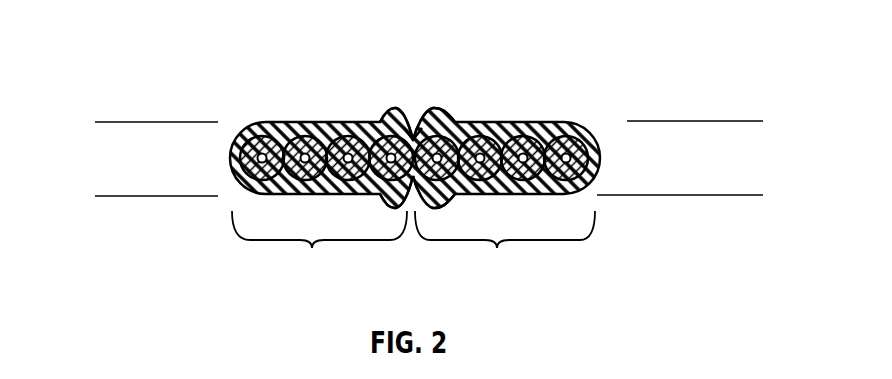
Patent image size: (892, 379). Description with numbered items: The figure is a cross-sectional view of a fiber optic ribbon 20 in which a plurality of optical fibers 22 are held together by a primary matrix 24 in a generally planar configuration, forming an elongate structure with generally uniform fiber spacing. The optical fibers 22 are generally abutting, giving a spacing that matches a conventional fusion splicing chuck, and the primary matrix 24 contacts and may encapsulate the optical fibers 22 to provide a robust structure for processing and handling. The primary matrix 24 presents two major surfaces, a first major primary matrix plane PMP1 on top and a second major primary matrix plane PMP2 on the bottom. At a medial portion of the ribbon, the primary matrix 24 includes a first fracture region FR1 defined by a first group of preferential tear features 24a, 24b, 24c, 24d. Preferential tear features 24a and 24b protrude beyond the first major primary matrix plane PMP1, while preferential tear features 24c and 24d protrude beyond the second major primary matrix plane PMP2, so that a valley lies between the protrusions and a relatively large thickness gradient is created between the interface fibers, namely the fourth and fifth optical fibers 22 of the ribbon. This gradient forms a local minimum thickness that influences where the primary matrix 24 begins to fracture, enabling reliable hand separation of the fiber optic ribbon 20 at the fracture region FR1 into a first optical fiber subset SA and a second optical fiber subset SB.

The fiber optic ribbon 20 is at (208, 108).
The optical fibers 22 is at (550, 122).
The primary matrix 24 is at (540, 197).
The preferential tear feature 24a is at (390, 110).
The preferential tear feature 24b is at (438, 110).
The preferential tear feature 24c is at (394, 208).
The preferential tear feature 24d is at (435, 208).
The first fracture region FR1 is at (412, 124).
The first major primary matrix plane PMP1 is at (427, 123).
The second major primary matrix plane PMP2 is at (427, 197).
The first optical fiber subset SA is at (319, 246).
The second optical fiber subset SB is at (505, 246).